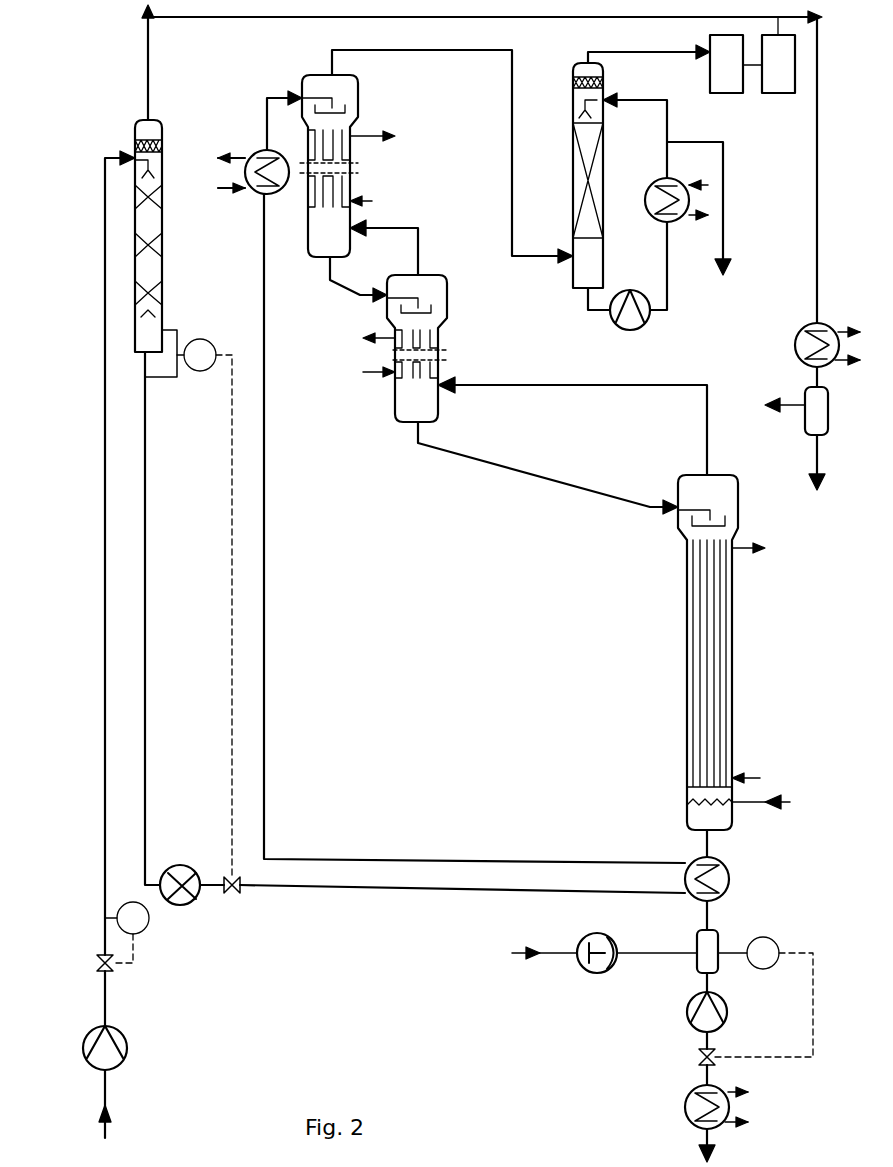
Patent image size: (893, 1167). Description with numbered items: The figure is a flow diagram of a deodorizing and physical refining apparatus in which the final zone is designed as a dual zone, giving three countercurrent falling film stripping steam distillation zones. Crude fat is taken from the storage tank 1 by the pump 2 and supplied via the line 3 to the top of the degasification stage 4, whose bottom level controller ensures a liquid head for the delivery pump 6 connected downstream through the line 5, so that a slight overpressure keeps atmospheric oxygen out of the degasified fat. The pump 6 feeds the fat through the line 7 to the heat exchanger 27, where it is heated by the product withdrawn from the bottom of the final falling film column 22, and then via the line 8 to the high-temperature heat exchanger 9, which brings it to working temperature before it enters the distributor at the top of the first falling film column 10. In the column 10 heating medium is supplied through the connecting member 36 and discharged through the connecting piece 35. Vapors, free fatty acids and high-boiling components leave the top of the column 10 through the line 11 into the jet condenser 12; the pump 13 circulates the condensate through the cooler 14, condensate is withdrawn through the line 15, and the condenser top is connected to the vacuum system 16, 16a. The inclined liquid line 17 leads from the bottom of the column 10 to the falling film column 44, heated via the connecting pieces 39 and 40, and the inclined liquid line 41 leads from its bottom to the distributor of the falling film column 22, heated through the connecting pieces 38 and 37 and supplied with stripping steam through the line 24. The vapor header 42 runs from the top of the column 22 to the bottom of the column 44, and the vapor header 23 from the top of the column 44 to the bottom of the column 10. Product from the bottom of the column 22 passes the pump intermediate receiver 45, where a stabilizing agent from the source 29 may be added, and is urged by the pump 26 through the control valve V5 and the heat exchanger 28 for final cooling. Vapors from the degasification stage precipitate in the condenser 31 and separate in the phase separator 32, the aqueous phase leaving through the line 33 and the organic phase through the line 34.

The storage tank 1 is at (105, 1100).
The pump 2 is at (120, 1024).
The line 3 is at (105, 673).
The degasification stage 4 is at (160, 184).
The line 5 is at (148, 612).
The delivery pump 6 is at (184, 864).
The line 7 is at (491, 896).
The line 8 is at (518, 860).
The high-temperature heat exchanger 9 is at (235, 193).
The first falling film column 10 is at (352, 178).
The line 11 is at (512, 74).
The jet condenser 12 is at (603, 150).
The pump 13 is at (636, 286).
The cooler 14 is at (670, 178).
The line 15 is at (730, 268).
The vacuum system 16 is at (724, 93).
The vacuum system 16a is at (782, 93).
The liquid line 17 is at (342, 288).
The final falling film column 22 is at (732, 655).
The vapor header 23 is at (418, 248).
The stripping steam supply means 24 is at (790, 802).
The pump 26 is at (725, 1018).
The heat exchanger 27 is at (730, 886).
The heat exchanger 28 is at (684, 1122).
The source 29 is at (592, 974).
The condenser 31 is at (796, 334).
The phase separator 32 is at (828, 420).
The line 33 is at (810, 490).
The line 34 is at (770, 412).
The connecting piece 35 is at (372, 136).
The connecting member 36 is at (374, 200).
The connecting piece 37 is at (740, 552).
The connecting piece 38 is at (748, 778).
The connecting piece 39 is at (374, 378).
The connecting piece 40 is at (355, 358).
The liquid line 41 is at (494, 476).
The vapor header 42 is at (542, 381).
The falling film column 44 is at (438, 340).
The pump intermediate receiver 45 is at (690, 936).
The control valve V5 is at (698, 1056).